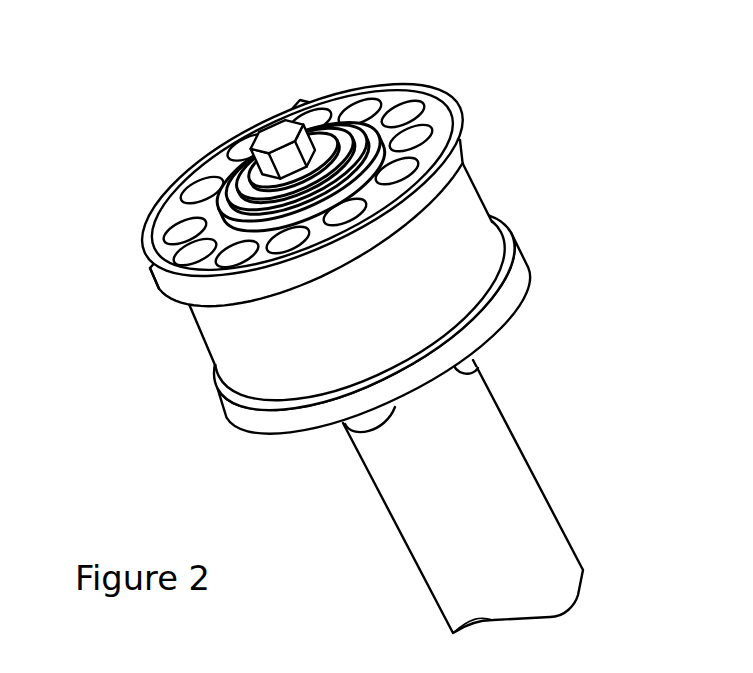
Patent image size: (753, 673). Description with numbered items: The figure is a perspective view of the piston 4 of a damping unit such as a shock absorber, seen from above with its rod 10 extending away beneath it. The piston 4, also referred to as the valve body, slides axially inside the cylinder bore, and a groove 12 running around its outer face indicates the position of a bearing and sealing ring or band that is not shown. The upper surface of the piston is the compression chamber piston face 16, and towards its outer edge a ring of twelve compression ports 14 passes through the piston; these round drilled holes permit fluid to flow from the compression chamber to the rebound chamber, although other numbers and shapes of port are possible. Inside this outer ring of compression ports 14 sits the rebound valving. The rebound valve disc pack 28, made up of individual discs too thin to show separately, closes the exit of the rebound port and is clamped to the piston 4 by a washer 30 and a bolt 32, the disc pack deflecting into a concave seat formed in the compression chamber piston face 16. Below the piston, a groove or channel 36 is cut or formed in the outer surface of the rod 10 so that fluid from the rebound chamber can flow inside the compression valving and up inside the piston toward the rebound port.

The piston 4 is at (138, 406).
The rod 10 is at (537, 537).
The groove 12 is at (475, 182).
The compression ports 14 is at (398, 170).
The compression chamber piston face 16 is at (393, 90).
The rebound valve disc pack 28 is at (240, 218).
The washer 30 is at (250, 168).
The bolt 32 is at (265, 140).
The groove or channel 36 is at (377, 422).